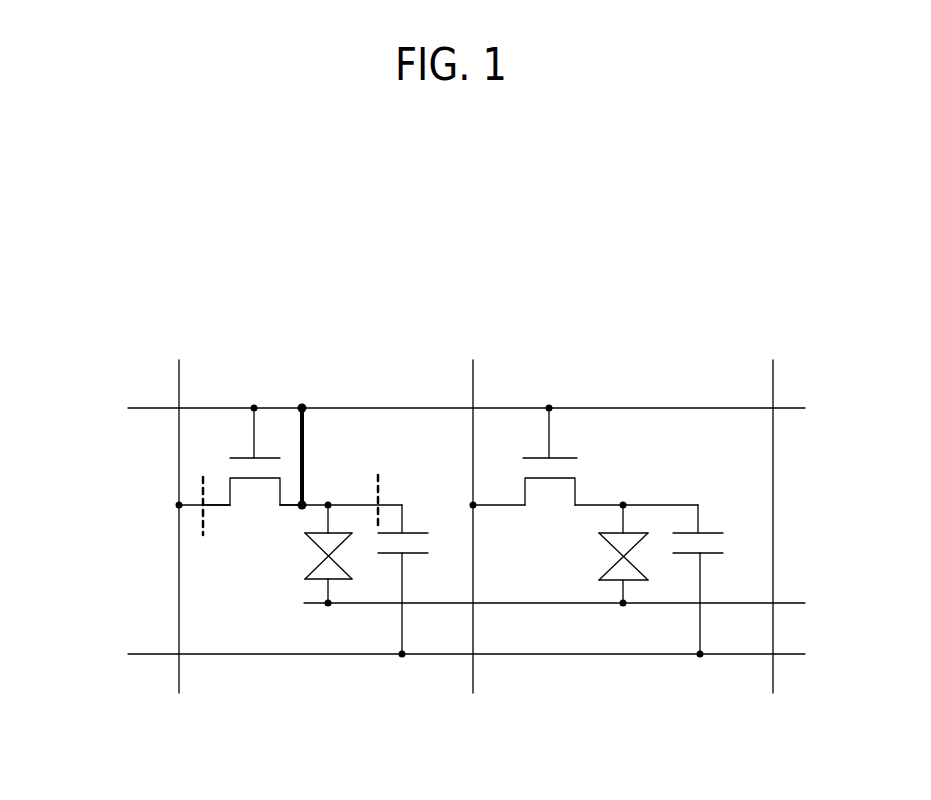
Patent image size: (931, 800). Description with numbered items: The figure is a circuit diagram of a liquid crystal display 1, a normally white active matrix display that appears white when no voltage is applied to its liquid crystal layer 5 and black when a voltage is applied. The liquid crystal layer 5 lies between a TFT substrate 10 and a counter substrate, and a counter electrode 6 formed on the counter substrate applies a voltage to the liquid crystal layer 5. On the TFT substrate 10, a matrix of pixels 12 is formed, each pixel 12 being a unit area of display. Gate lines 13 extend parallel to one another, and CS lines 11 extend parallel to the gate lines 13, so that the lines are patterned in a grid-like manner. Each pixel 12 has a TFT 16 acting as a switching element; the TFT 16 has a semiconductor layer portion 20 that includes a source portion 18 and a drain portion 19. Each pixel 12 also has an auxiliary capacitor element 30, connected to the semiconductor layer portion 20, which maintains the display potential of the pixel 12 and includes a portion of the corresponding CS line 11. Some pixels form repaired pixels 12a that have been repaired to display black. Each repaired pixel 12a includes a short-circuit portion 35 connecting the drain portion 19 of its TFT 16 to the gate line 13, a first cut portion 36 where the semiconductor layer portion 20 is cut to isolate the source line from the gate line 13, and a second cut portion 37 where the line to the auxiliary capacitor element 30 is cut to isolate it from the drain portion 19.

The liquid crystal display 1 is at (145, 313).
The TFT substrate 10 is at (466, 525).
The liquid crystal layer 5 is at (312, 570).
The counter electrode 6 is at (788, 603).
The CS line 11 is at (150, 654).
The pixel 12 is at (697, 460).
The repaired pixel 12a is at (400, 463).
The gate line 13 is at (150, 408).
The TFT 16 is at (217, 457).
The source portion 18 is at (180, 522).
The drain portion 19 is at (290, 507).
The semiconductor layer portion 20 is at (218, 510).
The auxiliary capacitor element 30 is at (417, 532).
The short-circuit portion 35 is at (302, 422).
The first cut portion 36 is at (203, 535).
The second cut portion 37 is at (378, 488).